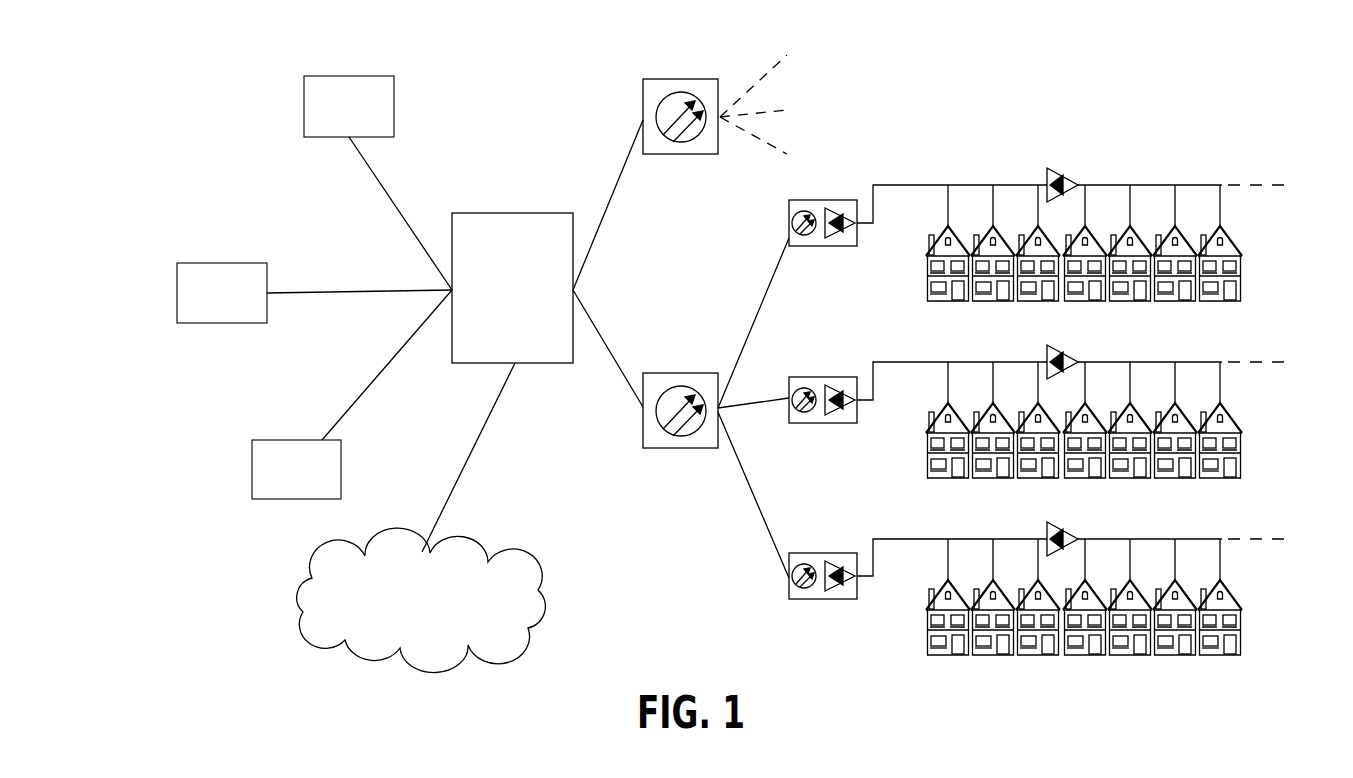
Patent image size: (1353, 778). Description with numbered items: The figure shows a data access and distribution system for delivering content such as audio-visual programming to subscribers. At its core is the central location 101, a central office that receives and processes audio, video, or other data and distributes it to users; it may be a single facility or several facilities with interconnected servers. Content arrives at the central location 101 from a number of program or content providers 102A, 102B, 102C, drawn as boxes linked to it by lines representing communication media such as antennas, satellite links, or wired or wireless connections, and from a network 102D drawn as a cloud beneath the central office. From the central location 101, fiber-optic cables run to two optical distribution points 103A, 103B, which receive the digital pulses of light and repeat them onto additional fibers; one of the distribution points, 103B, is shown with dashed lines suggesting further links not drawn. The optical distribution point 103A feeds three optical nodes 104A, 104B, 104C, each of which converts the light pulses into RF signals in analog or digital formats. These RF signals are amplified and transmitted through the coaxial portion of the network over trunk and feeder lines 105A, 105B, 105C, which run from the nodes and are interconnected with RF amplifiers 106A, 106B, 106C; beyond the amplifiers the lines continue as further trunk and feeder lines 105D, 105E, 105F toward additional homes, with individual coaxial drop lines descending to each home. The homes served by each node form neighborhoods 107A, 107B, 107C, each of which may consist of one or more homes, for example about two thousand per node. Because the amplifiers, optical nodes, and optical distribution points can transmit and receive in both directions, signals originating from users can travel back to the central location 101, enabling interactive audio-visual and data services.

The central location 101 is at (541, 213).
The content provider 102A is at (305, 76).
The content provider 102B is at (173, 318).
The content provider 102C is at (303, 440).
The network 102D is at (421, 518).
The optical distribution point 103A is at (675, 373).
The optical distribution point 103B is at (674, 79).
The optical node 104A is at (792, 200).
The optical node 104B is at (792, 377).
The optical node 104C is at (792, 553).
The trunk and feeder line 105A is at (945, 185).
The trunk and feeder line 105B is at (932, 362).
The trunk and feeder line 105C is at (932, 539).
The trunk and feeder line 105D is at (1183, 185).
The trunk and feeder line 105E is at (1170, 362).
The trunk and feeder line 105F is at (1170, 539).
The RF amplifier 106A is at (1068, 180).
The RF amplifier 106B is at (1068, 357).
The RF amplifier 106C is at (1068, 534).
The neighborhood 107A is at (1243, 270).
The neighborhood 107B is at (1243, 446).
The neighborhood 107C is at (1243, 623).